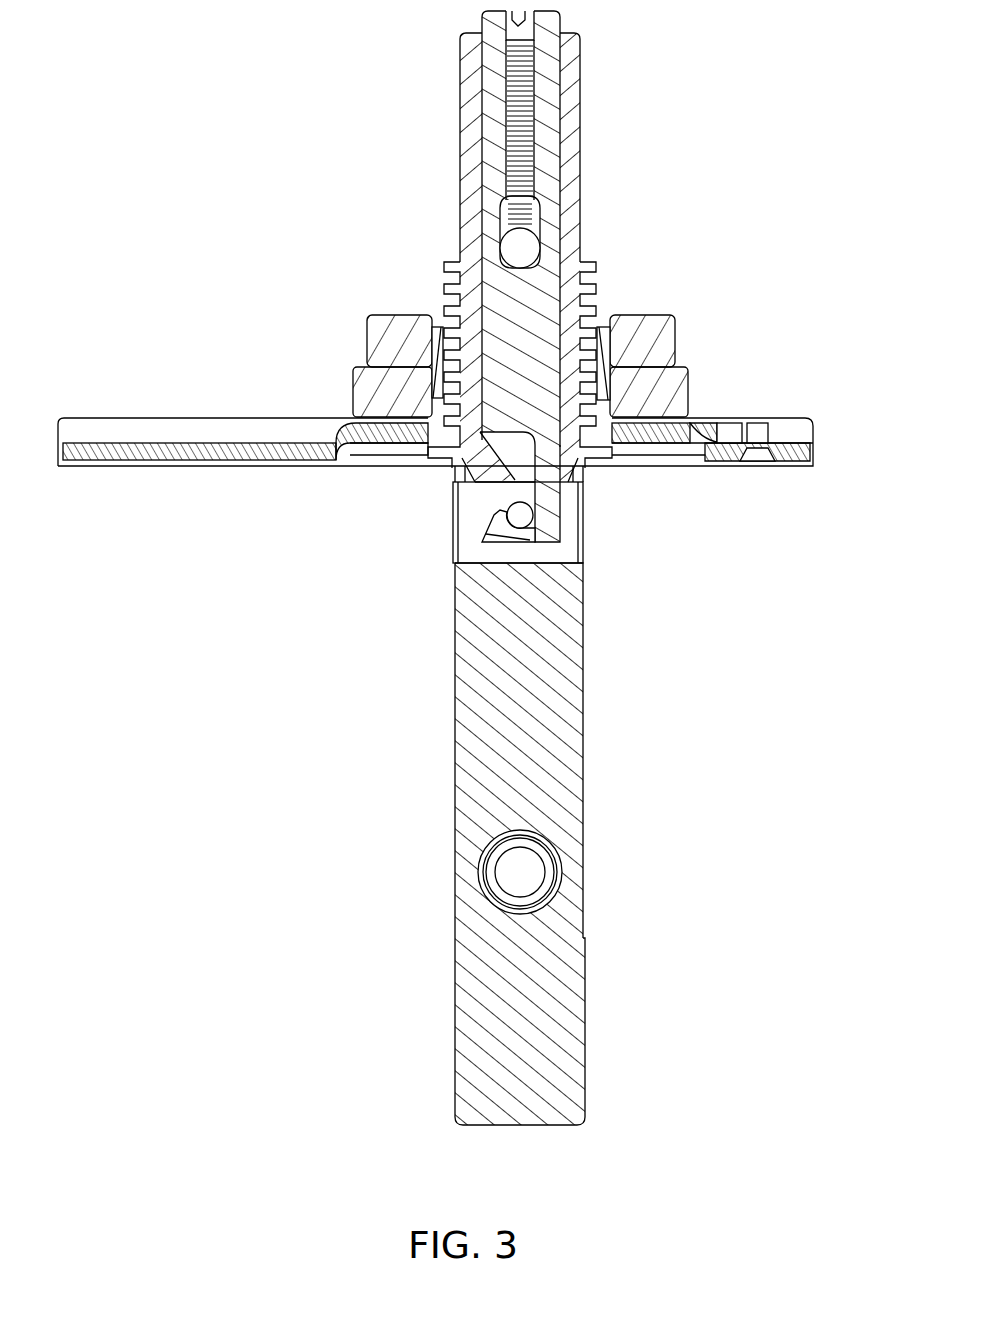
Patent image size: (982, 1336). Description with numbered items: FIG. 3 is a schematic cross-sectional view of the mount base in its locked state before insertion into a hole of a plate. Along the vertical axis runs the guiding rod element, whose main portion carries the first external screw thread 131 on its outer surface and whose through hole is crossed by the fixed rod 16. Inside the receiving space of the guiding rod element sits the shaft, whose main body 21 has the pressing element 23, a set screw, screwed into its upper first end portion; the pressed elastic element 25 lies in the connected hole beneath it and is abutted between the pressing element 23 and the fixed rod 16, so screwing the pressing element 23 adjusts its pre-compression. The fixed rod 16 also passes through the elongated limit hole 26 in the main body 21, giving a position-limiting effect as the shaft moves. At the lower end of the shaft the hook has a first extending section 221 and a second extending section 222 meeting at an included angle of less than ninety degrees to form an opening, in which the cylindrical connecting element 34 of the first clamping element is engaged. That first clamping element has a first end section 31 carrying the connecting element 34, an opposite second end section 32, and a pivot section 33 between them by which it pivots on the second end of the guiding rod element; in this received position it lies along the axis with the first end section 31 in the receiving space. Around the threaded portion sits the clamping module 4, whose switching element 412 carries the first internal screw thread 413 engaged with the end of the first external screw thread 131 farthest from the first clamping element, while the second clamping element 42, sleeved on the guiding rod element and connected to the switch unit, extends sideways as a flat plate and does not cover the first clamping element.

The clamping module 4 is at (469, 361).
The fixed rod 16 is at (522, 248).
The main body 21 is at (545, 94).
The pressing element 23 is at (530, 23).
The pressed elastic element 25 is at (520, 150).
The limit hole 26 is at (533, 218).
The first end section 31 is at (473, 552).
The second end section 32 is at (563, 1092).
The pivot section 33 is at (568, 692).
The connecting element 34 is at (518, 507).
The second clamping element 42 is at (258, 467).
The first external screw thread 131 is at (450, 268).
The first extending section 221 is at (547, 499).
The second extending section 222 is at (530, 540).
The switching element 412 is at (435, 362).
The first internal screw thread 413 is at (443, 337).